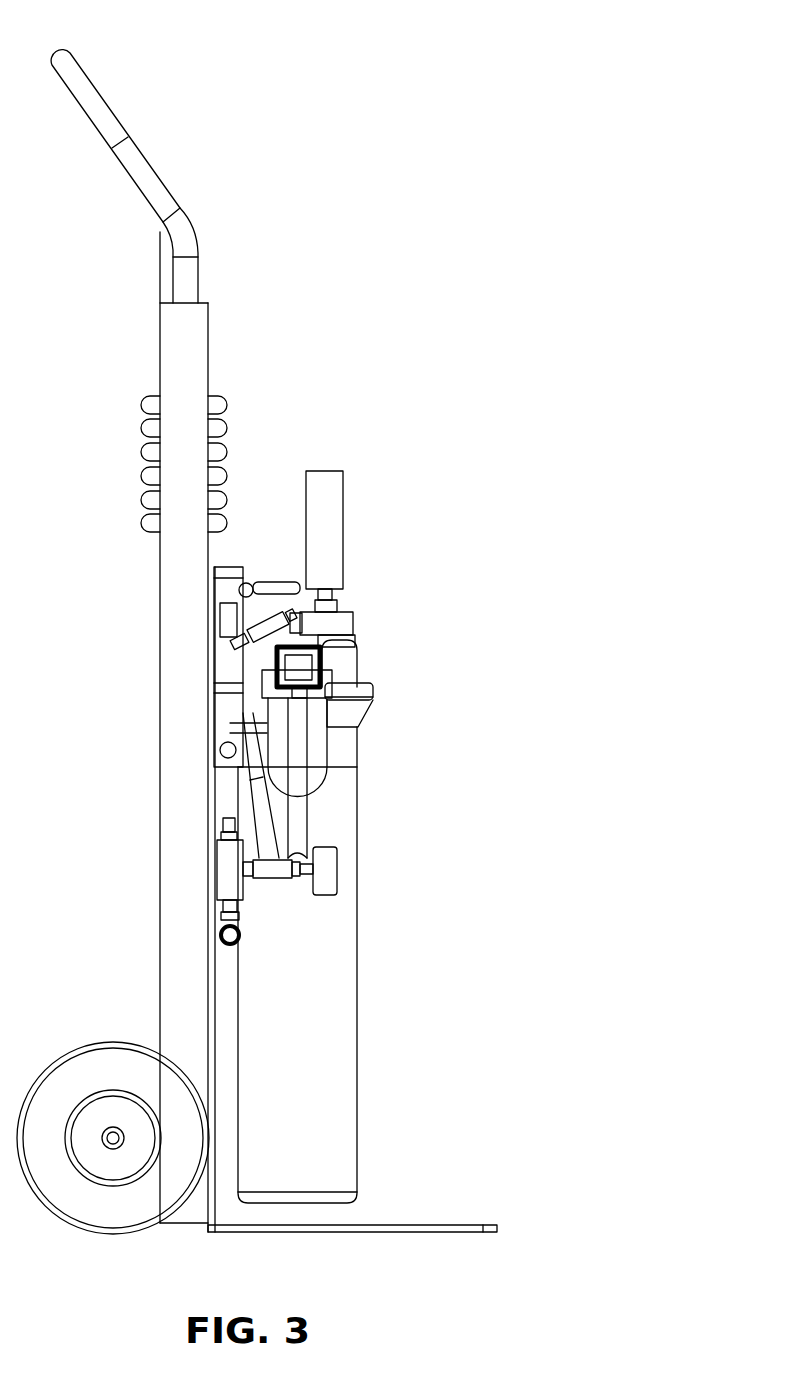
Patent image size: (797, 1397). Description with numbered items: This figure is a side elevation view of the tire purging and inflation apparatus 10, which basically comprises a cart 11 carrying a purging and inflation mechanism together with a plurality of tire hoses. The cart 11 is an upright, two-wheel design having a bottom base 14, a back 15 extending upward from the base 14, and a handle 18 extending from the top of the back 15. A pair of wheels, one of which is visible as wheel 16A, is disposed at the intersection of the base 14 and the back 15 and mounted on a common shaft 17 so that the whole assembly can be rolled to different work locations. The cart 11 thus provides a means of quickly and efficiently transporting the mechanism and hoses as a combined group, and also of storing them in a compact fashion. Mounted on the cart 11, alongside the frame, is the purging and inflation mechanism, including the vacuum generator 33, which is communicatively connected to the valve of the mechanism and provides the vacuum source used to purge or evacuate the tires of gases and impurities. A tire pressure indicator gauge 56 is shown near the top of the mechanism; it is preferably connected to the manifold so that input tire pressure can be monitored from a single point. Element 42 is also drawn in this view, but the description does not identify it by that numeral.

The tire purging and inflation apparatus 10 is at (394, 218).
The cart 11 is at (100, 936).
The bottom base 14 is at (427, 1223).
The back 15 is at (172, 683).
The wheel 16A is at (97, 1210).
The common shaft 17 is at (108, 1130).
The handle 18 is at (153, 183).
The vacuum generator 33 is at (262, 902).
The gas cylinder 42 is at (357, 937).
The tire pressure indicator gauge 56 is at (343, 525).